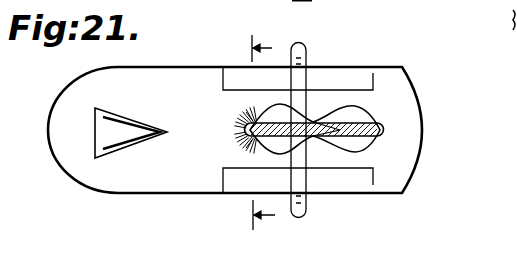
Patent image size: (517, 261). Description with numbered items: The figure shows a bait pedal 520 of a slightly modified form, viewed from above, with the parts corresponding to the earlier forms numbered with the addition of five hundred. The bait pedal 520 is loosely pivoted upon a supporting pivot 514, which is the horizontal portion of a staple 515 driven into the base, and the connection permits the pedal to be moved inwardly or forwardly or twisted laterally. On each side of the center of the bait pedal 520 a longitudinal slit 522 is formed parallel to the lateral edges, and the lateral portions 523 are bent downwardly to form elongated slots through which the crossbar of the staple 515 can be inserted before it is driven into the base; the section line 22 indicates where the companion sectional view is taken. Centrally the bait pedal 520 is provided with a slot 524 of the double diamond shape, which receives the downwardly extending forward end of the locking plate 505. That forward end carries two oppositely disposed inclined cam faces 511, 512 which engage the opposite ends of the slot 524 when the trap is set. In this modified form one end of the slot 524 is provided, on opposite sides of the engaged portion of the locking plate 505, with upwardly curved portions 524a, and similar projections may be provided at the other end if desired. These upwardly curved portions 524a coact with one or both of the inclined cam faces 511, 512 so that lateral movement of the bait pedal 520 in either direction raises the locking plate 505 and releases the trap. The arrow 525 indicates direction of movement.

The locking plate 505 is at (350, 125).
The inclined cam face 511 is at (240, 130).
The inclined cam face 512 is at (380, 130).
The pivot 514 is at (299, 80).
The staple 515 is at (300, 45).
The bait pedal 520 is at (235, 130).
The longitudinal slit 522 is at (242, 90).
The lateral portion 523 is at (357, 212).
The slot 524 is at (360, 113).
The upwardly curved portion 524a is at (242, 143).
The flow direction arrow 525 is at (110, 132).
The longitudinal slit 22 is at (252, 137).